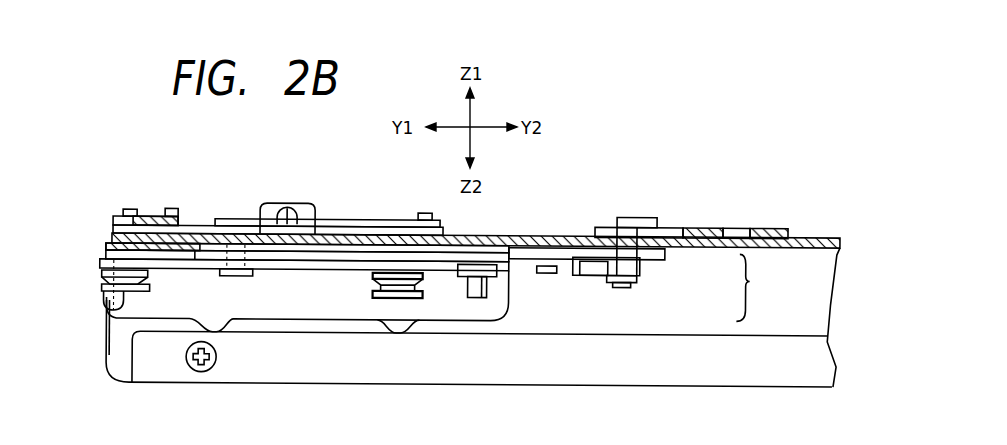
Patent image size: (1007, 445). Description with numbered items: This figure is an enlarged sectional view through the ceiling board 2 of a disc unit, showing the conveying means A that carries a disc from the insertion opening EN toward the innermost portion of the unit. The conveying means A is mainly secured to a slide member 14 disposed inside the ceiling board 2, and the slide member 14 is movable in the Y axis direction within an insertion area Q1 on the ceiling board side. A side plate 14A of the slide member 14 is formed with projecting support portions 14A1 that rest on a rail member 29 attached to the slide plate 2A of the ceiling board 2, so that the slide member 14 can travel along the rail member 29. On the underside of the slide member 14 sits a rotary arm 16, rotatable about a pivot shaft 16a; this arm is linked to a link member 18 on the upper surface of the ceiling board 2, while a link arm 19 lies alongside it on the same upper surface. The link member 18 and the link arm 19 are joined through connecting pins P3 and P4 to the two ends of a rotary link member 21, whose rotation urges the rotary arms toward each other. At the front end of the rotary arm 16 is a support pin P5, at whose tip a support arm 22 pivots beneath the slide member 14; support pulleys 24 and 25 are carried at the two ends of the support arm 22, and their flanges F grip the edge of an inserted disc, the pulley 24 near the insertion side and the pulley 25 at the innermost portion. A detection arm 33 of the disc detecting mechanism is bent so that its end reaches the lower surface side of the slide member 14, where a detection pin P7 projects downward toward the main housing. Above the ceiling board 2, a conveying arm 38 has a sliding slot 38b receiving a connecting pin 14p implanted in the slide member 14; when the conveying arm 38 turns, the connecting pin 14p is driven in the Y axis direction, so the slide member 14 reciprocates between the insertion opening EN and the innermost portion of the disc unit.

The ceiling board 2 is at (558, 233).
The slide plate 2A is at (116, 366).
The slide member 14 is at (658, 257).
The side plate 14A is at (510, 300).
The projecting support portion 14A1 is at (400, 326).
The connecting pin 14p is at (633, 214).
The rotary arm 16 is at (593, 282).
The pivot shaft 16a is at (626, 285).
The link member 18 is at (357, 218).
The link arm 19 is at (158, 216).
The rotary link member 21 is at (200, 225).
The support arm 22 is at (290, 268).
The support pulley 24 is at (118, 296).
The support pulley 25 is at (373, 292).
The rail member 29 is at (605, 383).
The detection arm 33 is at (478, 262).
The conveying arm 38 is at (676, 224).
The sliding slot 38b is at (742, 224).
The conveying means A is at (324, 212).
The insertion opening EN is at (98, 271).
The flange F is at (150, 279).
The connecting pin P3 is at (425, 211).
The connecting pin P4 is at (128, 209).
The support pin P5 is at (243, 274).
The detection pin P7 is at (478, 296).
The insertion area Q1 is at (758, 287).